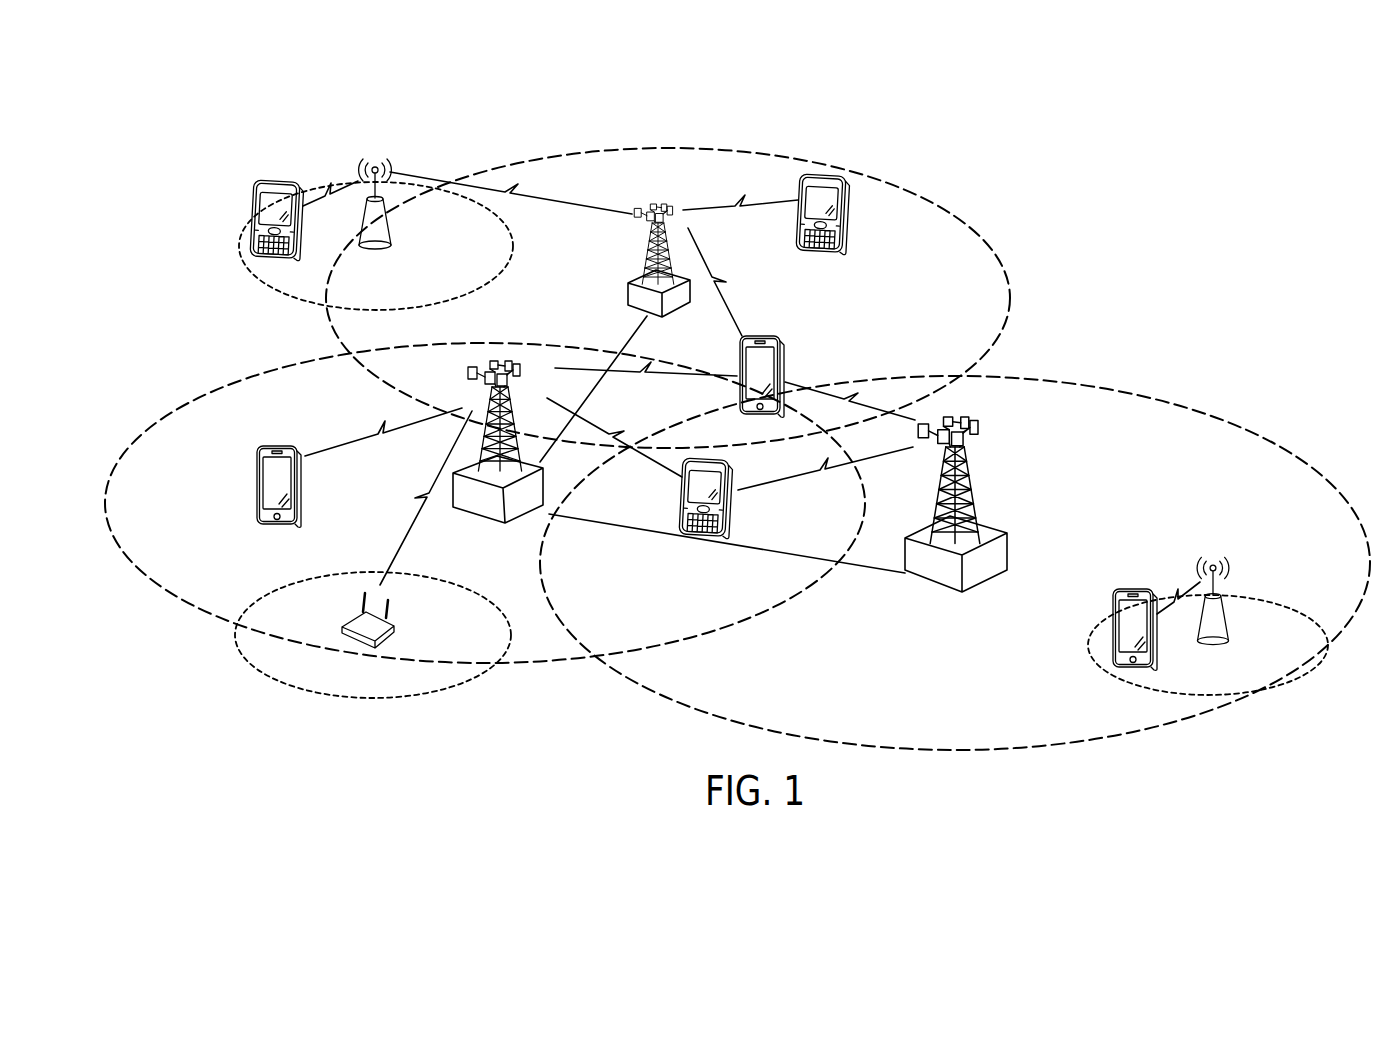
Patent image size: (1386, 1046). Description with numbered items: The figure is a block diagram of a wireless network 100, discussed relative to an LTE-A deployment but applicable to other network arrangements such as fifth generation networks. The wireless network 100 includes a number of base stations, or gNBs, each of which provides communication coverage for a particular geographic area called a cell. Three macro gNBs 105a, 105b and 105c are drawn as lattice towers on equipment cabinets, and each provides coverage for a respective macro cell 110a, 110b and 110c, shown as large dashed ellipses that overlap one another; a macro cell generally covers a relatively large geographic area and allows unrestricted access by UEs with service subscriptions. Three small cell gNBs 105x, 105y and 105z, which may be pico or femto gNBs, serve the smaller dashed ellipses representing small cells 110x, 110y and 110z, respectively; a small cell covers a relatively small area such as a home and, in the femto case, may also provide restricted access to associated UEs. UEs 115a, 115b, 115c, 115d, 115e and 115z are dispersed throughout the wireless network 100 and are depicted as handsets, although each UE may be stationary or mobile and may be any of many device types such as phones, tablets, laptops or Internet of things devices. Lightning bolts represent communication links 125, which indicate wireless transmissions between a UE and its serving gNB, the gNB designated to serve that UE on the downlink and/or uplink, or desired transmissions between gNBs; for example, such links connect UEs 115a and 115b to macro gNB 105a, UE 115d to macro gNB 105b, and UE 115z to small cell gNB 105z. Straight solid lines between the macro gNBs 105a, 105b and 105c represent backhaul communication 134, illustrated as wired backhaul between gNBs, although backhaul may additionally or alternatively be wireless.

The wireless network 100 is at (1108, 198).
The macro gNB 105a is at (483, 527).
The macro gNB 105b is at (628, 292).
The macro gNB 105c is at (990, 590).
The small cell gNB 105x is at (398, 637).
The small cell gNB 105y is at (392, 245).
The small cell gNB 105z is at (1228, 637).
The macro cell 110a is at (213, 392).
The macro cell 110b is at (845, 168).
The macro cell 110c is at (1155, 400).
The small cell 110x is at (300, 700).
The small cell 110y is at (285, 300).
The small cell 110z is at (1300, 687).
The UE 115a is at (260, 490).
The UE 115b is at (790, 355).
The UE 115c is at (683, 505).
The UE 115d is at (850, 218).
The UE 115e is at (255, 197).
The UE 115z is at (1112, 603).
The communication links 125 is at (332, 186).
The backhaul communication 134 is at (630, 335).